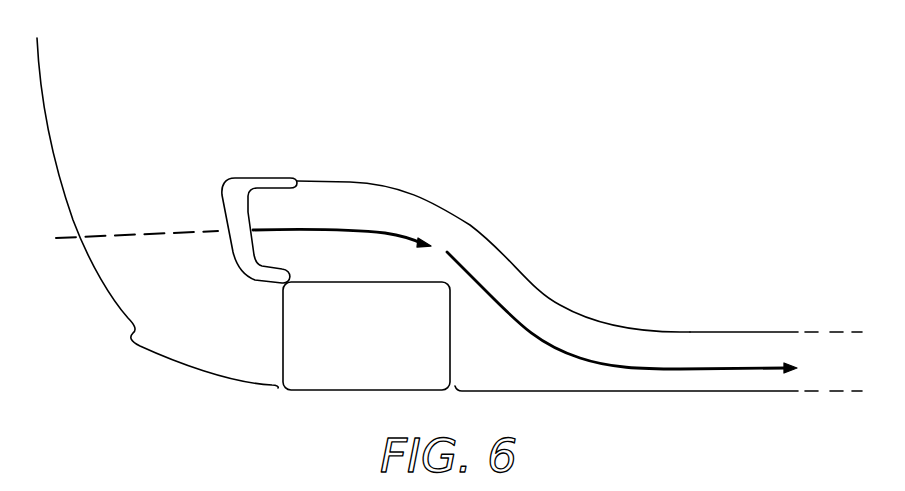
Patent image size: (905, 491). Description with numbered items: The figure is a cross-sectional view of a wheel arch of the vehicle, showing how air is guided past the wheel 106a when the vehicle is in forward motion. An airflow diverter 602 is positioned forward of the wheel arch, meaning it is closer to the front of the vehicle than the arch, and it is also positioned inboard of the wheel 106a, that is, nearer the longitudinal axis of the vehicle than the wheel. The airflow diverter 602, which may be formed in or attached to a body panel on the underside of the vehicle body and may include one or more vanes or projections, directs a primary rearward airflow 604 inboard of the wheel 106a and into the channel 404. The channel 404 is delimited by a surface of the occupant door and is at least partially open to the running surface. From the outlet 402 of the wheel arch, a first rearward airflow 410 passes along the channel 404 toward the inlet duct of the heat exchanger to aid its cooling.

The wheel 106a is at (395, 348).
The outlet of the wheel arch 402 is at (486, 223).
The channel 404 is at (733, 322).
The first rearward airflow 410 is at (743, 371).
The airflow diverter 602 is at (244, 177).
The primary rearward airflow 604 is at (363, 228).